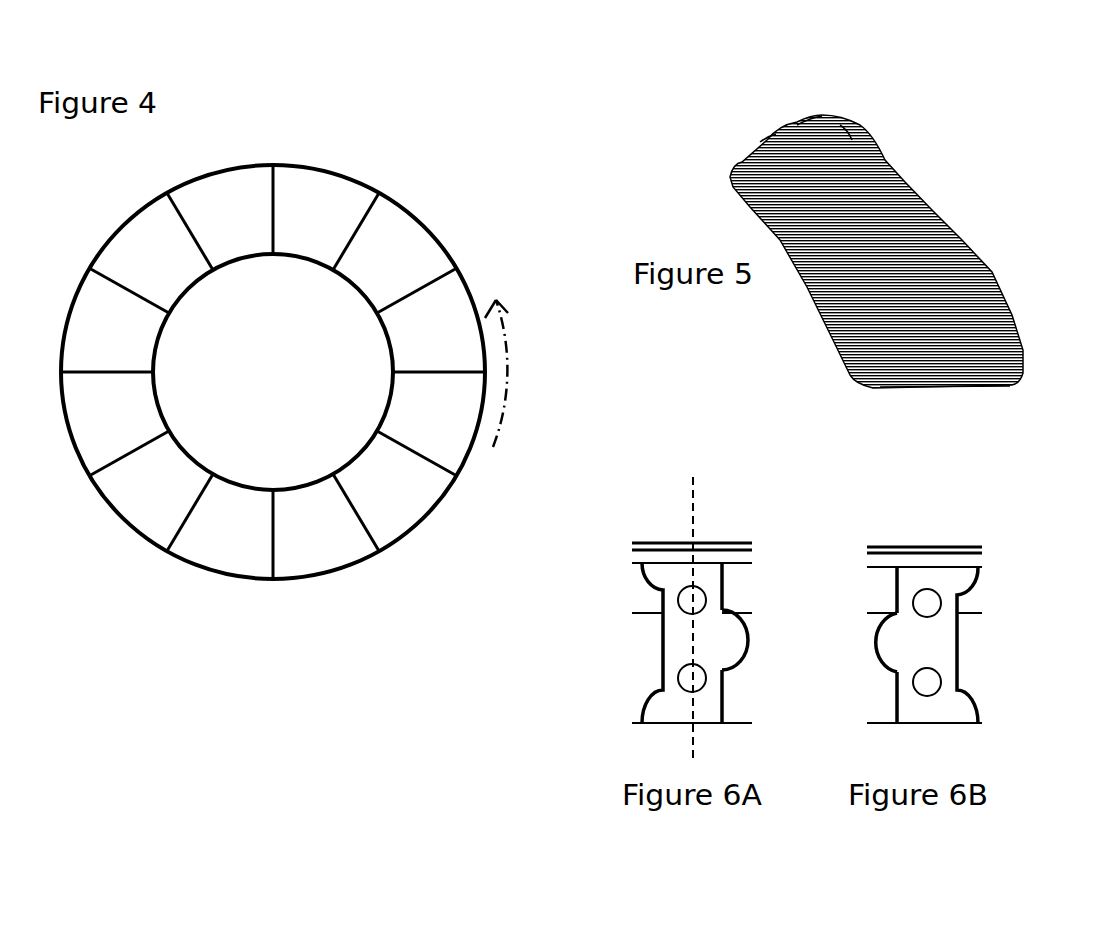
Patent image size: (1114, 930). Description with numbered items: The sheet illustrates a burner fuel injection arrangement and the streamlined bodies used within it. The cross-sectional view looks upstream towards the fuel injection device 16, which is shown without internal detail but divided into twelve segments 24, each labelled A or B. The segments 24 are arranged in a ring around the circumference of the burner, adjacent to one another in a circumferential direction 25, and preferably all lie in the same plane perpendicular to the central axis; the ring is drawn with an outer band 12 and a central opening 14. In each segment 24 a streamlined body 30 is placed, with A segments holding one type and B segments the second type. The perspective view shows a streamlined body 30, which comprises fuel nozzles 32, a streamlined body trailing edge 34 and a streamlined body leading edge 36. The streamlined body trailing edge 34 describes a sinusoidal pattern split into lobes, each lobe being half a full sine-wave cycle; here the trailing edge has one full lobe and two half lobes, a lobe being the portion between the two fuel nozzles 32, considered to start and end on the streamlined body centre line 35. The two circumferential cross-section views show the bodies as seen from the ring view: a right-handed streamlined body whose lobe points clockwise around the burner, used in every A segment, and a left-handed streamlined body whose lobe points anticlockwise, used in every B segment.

In FIG. 4, the ring band 12 is at (128, 218).
In FIG. 6A, the ring band 12 is at (683, 540).
In FIG. 6B, the ring band 12 is at (945, 545).
In FIG. 4, the central opening 14 is at (257, 459).
In FIG. 4, the fuel injection device 16 is at (440, 184).
In FIG. 4, the segments 24 is at (230, 190).
In FIG. 4, the circumferential direction 25 is at (503, 345).
In FIG. 5, the streamlined body 30 is at (988, 146).
In FIG. 5, the fuel nozzles 32 is at (768, 135).
In FIG. 6A, the fuel nozzles 32 is at (695, 603).
In FIG. 6B, the fuel nozzles 32 is at (825, 574).
In FIG. 5, the streamlined body trailing edge 34 is at (807, 122).
In FIG. 6A, the streamlined body trailing edge 34 is at (732, 665).
In FIG. 6B, the streamlined body trailing edge 34 is at (885, 668).
In FIG. 6A, the streamlined body centre line 35 is at (693, 490).
In FIG. 5, the streamlined body leading edge 36 is at (1012, 383).